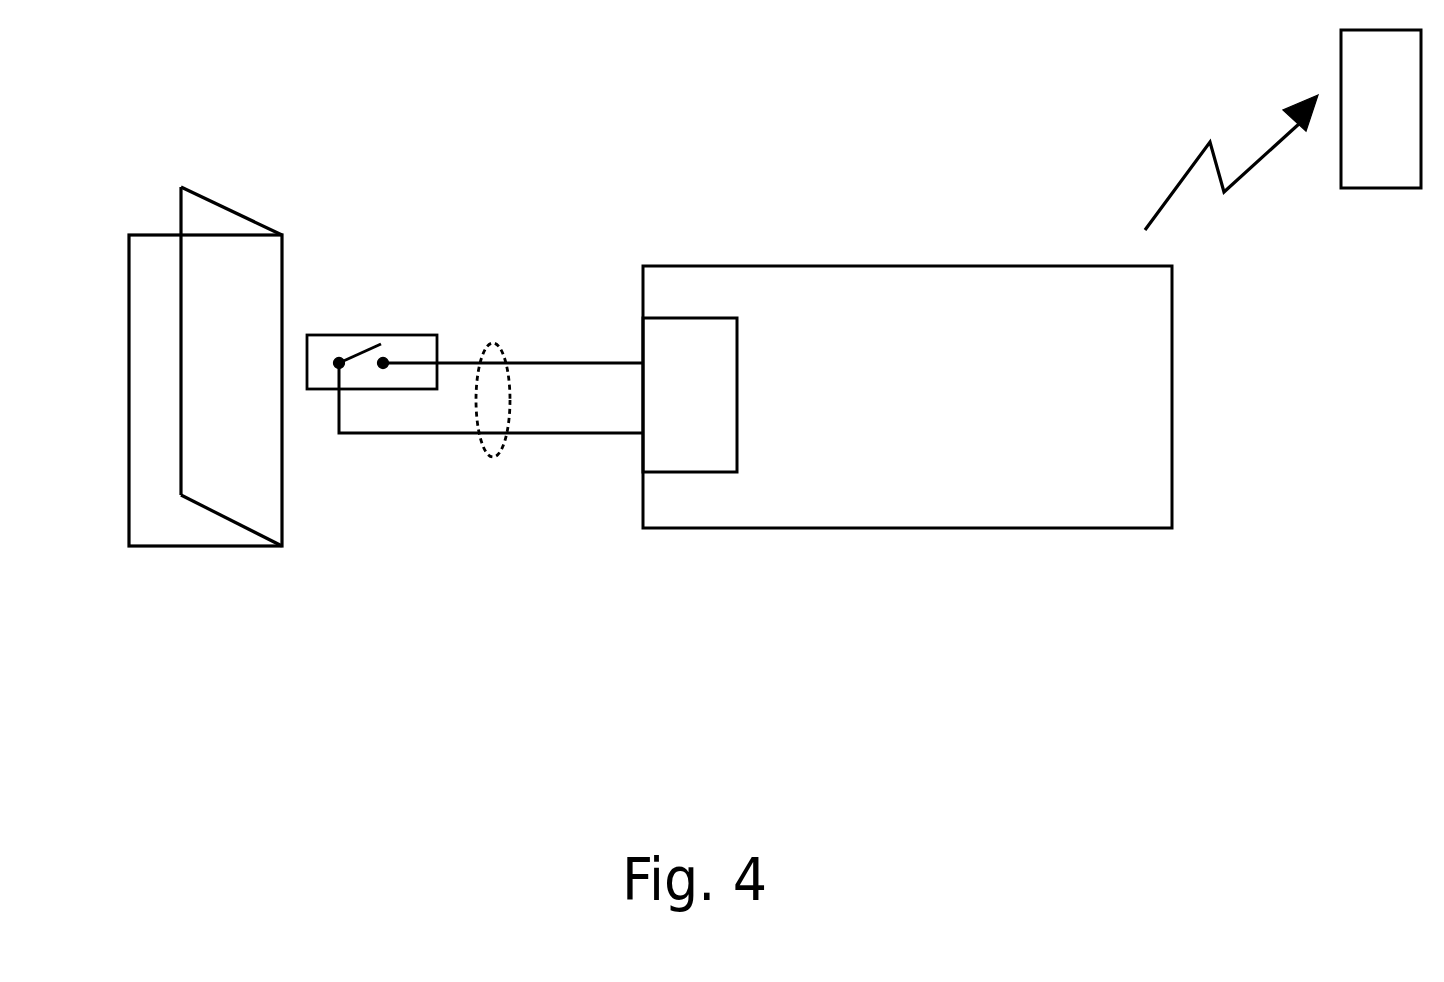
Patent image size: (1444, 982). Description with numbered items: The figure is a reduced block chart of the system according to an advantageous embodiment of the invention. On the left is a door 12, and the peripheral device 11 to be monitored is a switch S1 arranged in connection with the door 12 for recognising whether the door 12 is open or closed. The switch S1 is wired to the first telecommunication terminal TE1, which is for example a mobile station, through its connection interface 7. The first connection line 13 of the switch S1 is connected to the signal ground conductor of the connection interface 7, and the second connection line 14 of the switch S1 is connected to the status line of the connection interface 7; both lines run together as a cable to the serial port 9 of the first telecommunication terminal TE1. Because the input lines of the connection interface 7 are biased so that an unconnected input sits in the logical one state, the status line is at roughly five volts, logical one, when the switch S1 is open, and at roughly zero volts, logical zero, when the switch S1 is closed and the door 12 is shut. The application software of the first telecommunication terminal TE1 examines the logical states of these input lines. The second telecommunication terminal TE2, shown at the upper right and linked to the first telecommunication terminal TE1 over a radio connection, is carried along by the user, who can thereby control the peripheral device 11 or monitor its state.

The door 12 is at (227, 212).
The peripheral device 11 is at (410, 335).
The switch S1 is at (355, 347).
The second connection line 14 is at (443, 362).
The first connection line 13 is at (337, 402).
The serial port 9 is at (493, 458).
The first telecommunication terminal TE1 is at (767, 262).
The connection interface 7 is at (693, 472).
The second telecommunication terminal TE2 is at (1402, 190).